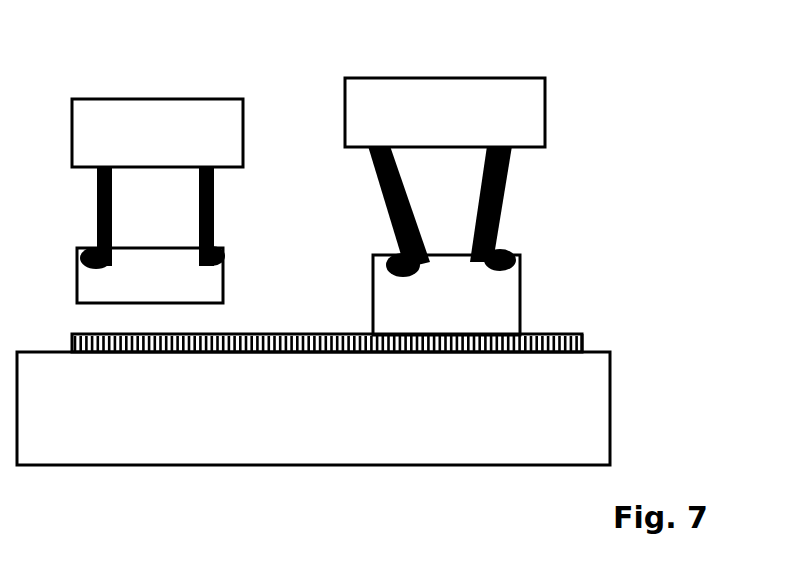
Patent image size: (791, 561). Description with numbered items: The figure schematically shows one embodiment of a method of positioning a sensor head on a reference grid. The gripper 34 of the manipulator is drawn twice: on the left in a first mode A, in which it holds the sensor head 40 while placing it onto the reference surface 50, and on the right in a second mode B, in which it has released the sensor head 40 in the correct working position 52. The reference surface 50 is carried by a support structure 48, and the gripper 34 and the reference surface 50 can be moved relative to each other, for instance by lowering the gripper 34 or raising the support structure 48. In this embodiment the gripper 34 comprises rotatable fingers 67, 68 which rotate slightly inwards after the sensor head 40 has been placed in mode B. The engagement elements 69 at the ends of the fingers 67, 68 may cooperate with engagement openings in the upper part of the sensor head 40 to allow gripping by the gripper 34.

The gripper 34 is at (160, 110).
The sensor head 40 is at (223, 285).
The support structure 48 is at (478, 443).
The reference surface 50 is at (580, 332).
The correct working position 52 is at (143, 335).
The rotatable finger 67 is at (97, 208).
The rotatable finger 68 is at (198, 205).
The engagement element 69 is at (400, 253).